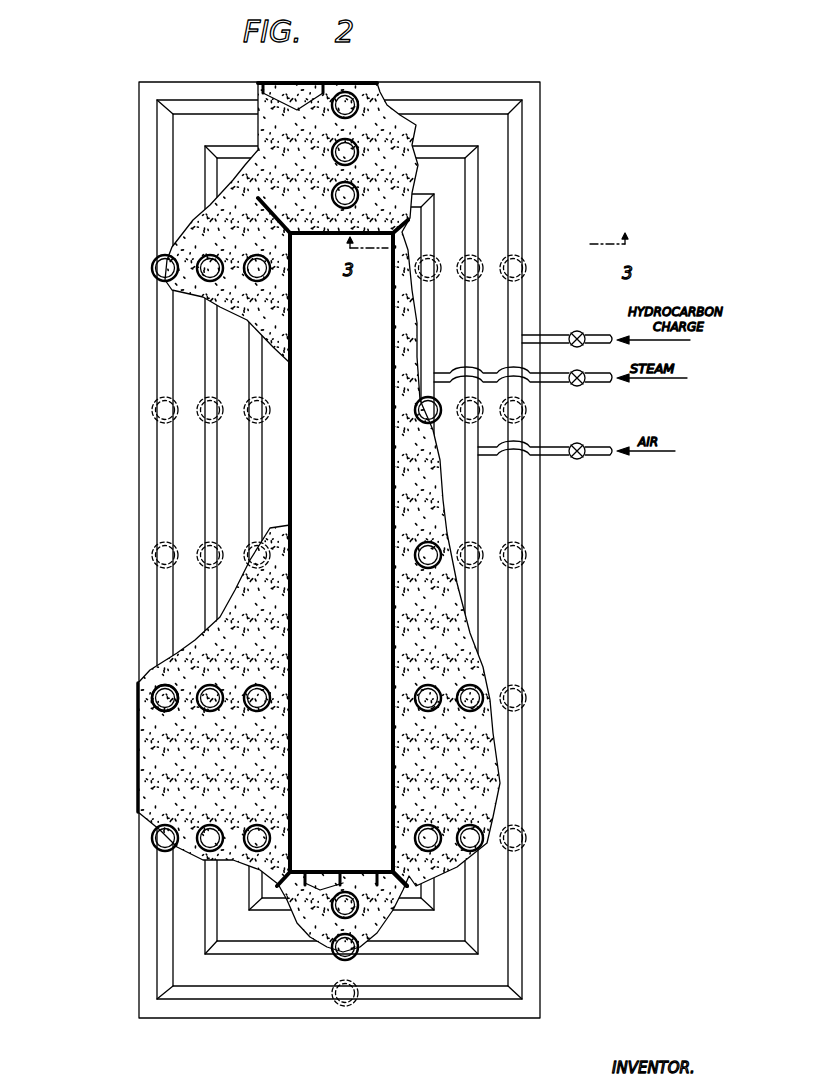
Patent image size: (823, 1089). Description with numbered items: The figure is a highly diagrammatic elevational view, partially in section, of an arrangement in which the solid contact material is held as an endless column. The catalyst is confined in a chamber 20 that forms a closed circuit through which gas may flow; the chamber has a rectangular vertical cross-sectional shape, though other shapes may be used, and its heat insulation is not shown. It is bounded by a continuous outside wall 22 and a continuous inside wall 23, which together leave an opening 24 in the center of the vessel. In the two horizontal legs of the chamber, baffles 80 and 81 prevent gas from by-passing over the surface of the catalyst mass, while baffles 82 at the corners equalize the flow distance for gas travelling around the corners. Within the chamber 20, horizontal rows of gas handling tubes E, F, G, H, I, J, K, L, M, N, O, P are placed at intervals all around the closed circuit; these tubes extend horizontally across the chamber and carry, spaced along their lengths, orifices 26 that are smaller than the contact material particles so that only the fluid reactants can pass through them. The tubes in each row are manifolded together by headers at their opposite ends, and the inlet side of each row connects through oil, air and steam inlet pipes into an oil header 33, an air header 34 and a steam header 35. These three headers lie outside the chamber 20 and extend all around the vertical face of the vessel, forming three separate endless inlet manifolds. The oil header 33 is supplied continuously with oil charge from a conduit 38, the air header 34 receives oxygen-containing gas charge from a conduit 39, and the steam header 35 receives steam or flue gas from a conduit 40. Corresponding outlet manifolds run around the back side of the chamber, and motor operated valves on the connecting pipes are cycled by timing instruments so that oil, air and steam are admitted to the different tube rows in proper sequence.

The chamber 20 is at (505, 93).
The continuous outside wall 22 is at (140, 757).
The continuous inside wall 23 is at (287, 603).
The opening 24 is at (341, 552).
The orifices 26 is at (160, 685).
The oil header 33 is at (517, 203).
The air header 34 is at (212, 173).
The steam header 35 is at (428, 223).
The oil charge conduit 38 is at (550, 340).
The oxygen containing gas charge conduit 39 is at (557, 453).
The steam conduit 40 is at (593, 382).
The baffle 80 is at (297, 110).
The baffle 81 is at (320, 890).
The corner baffles 82 is at (377, 907).
The gas handling tubes E is at (353, 107).
The gas handling tubes F is at (527, 263).
The gas handling tubes G is at (528, 409).
The gas handling tubes H is at (527, 560).
The gas handling tubes I is at (523, 703).
The gas handling tubes J is at (527, 840).
The gas handling tubes K is at (338, 1006).
The gas handling tubes L is at (153, 843).
The gas handling tubes M is at (157, 707).
The gas handling tubes N is at (153, 562).
The gas handling tubes O is at (153, 415).
The gas handling tubes P is at (155, 273).